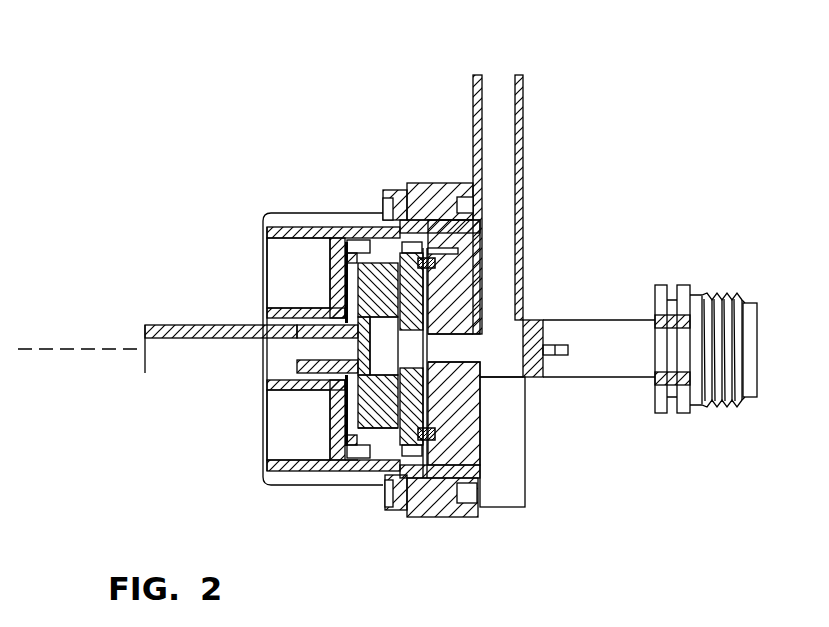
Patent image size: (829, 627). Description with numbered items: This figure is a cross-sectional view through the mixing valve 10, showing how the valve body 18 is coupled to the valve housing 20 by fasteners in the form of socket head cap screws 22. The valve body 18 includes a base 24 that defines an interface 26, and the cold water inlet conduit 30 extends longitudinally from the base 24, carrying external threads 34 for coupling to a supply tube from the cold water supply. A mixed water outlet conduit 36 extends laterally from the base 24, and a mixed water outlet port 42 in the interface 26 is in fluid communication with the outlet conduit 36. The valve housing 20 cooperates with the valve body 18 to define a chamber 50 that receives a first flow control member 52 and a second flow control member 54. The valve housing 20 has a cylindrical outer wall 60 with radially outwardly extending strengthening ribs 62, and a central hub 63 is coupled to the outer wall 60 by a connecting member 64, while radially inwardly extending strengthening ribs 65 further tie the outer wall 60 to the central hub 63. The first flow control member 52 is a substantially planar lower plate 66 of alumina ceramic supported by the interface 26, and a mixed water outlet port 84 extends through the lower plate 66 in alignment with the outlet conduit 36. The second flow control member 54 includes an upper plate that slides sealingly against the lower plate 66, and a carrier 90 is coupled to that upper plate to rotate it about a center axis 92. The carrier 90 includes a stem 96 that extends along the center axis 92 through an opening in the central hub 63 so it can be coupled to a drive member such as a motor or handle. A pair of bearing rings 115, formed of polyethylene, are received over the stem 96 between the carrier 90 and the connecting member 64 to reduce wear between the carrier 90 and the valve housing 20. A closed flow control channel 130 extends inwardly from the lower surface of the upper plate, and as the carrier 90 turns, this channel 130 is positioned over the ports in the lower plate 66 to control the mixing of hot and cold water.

The mixing valve 10 is at (694, 86).
The valve body 18 is at (603, 282).
The valve housing 20 is at (250, 208).
The socket head cap screws 22 is at (392, 185).
The base 24 is at (463, 507).
The interface 26 is at (365, 470).
The cold water inlet conduit 30 is at (748, 304).
The external threads 34 is at (745, 402).
The mixed water outlet conduit 36 is at (524, 126).
The mixed water outlet port 42 is at (462, 338).
The chamber 50 is at (338, 458).
The first flow control member 52 is at (413, 252).
The second flow control member 54 is at (381, 260).
The cylindrical outer wall 60 is at (270, 232).
The strengthening ribs 62 is at (285, 211).
The central hub 63 is at (268, 383).
The connecting member 64 is at (337, 278).
The strengthening ribs 65 is at (277, 260).
The lower plate 66 is at (478, 478).
The mixed water outlet port 84 is at (418, 353).
The carrier 90 is at (162, 384).
The center axis 92 is at (70, 347).
The stem 96 is at (144, 366).
The bearing rings 115 is at (333, 237).
The flow control channel 130 is at (382, 396).